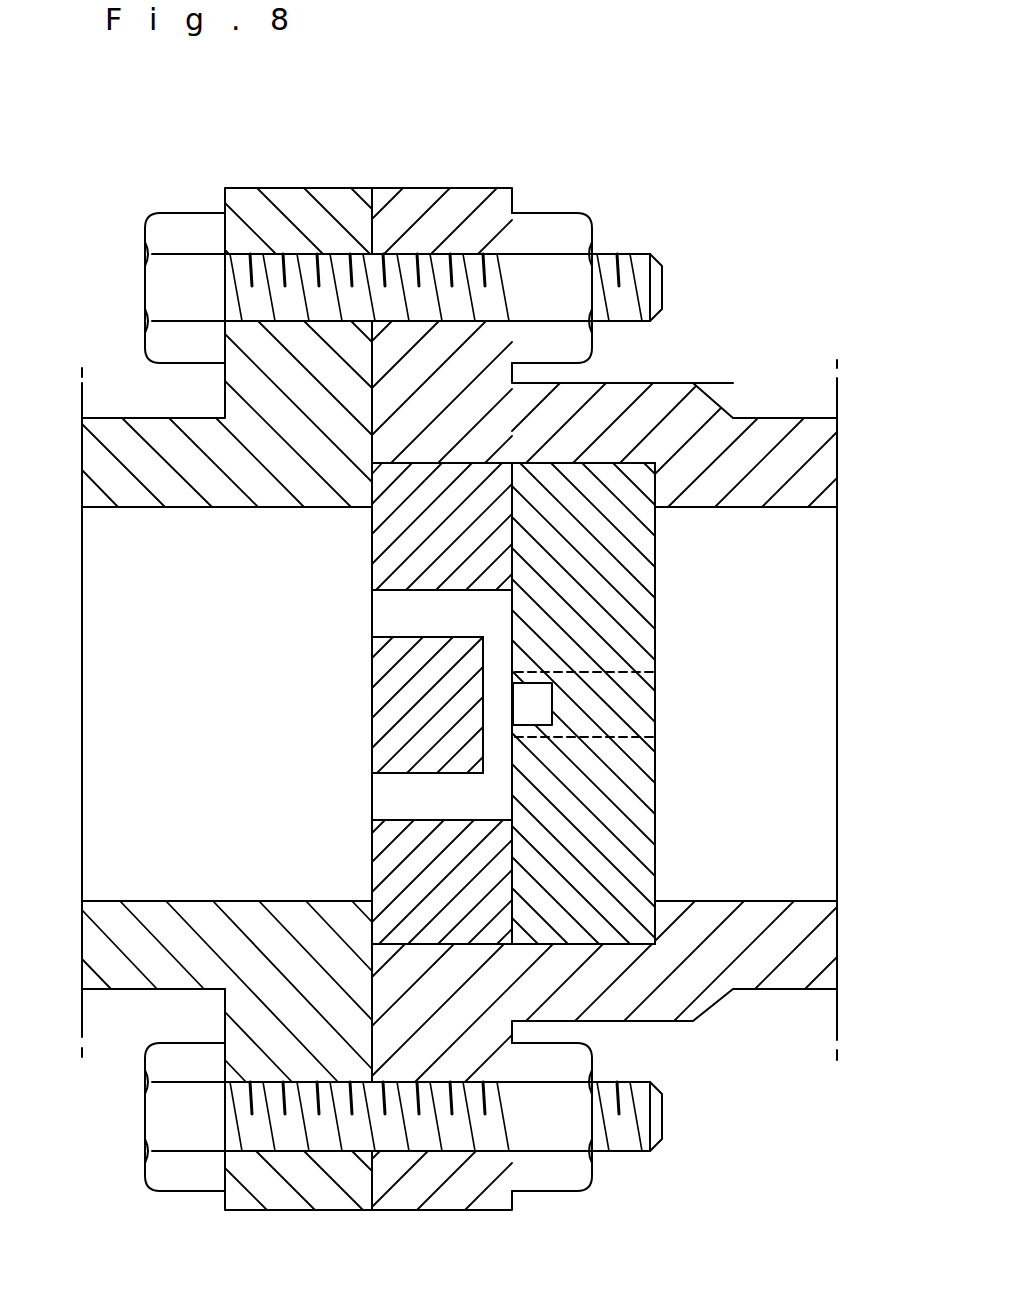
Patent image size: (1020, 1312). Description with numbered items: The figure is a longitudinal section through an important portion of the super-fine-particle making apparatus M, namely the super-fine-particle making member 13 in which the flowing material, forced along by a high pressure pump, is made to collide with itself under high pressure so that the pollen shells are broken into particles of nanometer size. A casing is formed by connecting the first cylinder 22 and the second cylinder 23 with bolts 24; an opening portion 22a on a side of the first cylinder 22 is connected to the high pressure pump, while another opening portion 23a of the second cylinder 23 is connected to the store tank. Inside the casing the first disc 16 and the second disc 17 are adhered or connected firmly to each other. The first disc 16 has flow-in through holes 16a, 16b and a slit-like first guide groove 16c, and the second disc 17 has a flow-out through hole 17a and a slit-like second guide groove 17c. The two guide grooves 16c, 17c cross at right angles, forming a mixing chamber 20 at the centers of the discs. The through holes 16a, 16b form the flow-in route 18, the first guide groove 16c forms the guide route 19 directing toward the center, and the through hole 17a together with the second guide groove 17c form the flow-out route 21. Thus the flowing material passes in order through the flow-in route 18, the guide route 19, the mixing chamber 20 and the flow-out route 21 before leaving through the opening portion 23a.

The super-fine-particle making member 13 is at (140, 995).
The first disc 16 is at (422, 540).
The through hole 16a is at (388, 615).
The through hole 16b is at (395, 786).
The first guide groove 16c is at (498, 692).
The second disc 17 is at (613, 598).
The through hole 17a is at (625, 725).
The second guide groove 17c is at (532, 698).
The flow-in route 18 is at (403, 605).
The guide route 19 is at (493, 649).
The mixing chamber 20 is at (512, 706).
The flow-out route 21 is at (620, 707).
The first cylinder 22 is at (147, 950).
The opening portion 22a is at (112, 737).
The second cylinder 23 is at (787, 968).
The opening portion 23a is at (813, 665).
The bolts 24 is at (613, 283).
The super-fine-particle making apparatus M is at (688, 350).